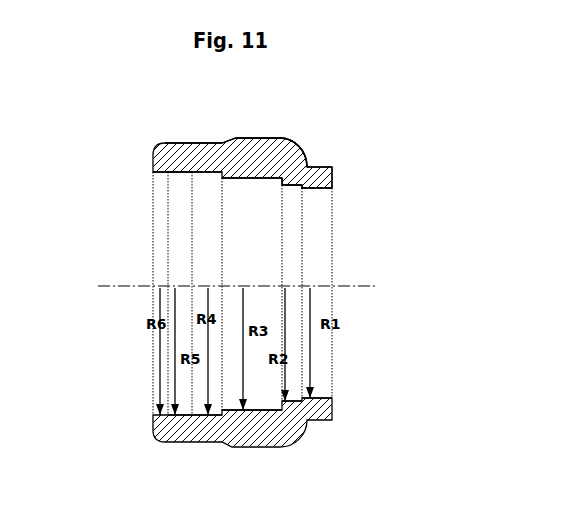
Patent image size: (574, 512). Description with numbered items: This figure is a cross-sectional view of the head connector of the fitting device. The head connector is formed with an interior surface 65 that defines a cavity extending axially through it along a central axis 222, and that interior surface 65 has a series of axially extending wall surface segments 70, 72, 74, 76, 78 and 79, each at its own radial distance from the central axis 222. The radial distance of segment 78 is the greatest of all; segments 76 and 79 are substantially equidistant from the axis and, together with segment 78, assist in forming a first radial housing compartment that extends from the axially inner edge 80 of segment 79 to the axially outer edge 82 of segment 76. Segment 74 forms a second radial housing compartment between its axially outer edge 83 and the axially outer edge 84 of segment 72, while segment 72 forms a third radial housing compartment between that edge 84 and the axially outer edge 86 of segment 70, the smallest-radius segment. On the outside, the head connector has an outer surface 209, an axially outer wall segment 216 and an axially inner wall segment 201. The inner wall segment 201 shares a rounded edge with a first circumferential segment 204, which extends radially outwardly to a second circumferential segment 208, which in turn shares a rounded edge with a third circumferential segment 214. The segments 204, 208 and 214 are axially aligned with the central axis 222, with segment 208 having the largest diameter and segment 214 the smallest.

The axially inner wall segment 201 is at (147, 165).
The first circumferential segment 204 is at (193, 143).
The outer surface 209 is at (253, 117).
The second circumferential segment 208 is at (258, 138).
The third circumferential segment 214 is at (315, 167).
The axially outer wall segment 216 is at (333, 173).
The axially outer edge of wall surface segment 76 82 is at (192, 170).
The axially inner edge of wall surface segment 79 80 is at (169, 173).
The axially outer edge of segment 74 83 is at (218, 178).
The axially outer edge of segment 72 84 is at (276, 183).
The axially outer edge of segment 70 86 is at (298, 190).
The interior surface 65 is at (154, 232).
The central axis 222 is at (352, 282).
The wall surface segment 79 is at (155, 417).
The wall surface segment 78 is at (180, 418).
The wall surface segment 76 is at (208, 418).
The wall surface segment 74 is at (252, 413).
The wall surface segment 72 is at (290, 403).
The wall surface segment 70 is at (323, 400).